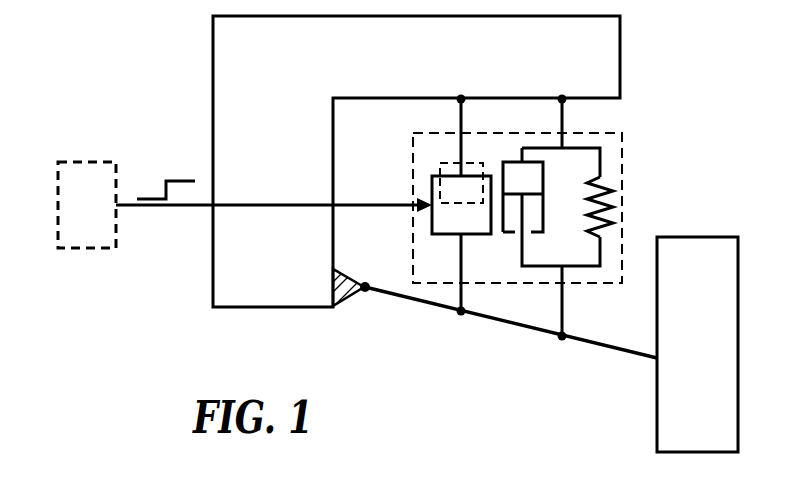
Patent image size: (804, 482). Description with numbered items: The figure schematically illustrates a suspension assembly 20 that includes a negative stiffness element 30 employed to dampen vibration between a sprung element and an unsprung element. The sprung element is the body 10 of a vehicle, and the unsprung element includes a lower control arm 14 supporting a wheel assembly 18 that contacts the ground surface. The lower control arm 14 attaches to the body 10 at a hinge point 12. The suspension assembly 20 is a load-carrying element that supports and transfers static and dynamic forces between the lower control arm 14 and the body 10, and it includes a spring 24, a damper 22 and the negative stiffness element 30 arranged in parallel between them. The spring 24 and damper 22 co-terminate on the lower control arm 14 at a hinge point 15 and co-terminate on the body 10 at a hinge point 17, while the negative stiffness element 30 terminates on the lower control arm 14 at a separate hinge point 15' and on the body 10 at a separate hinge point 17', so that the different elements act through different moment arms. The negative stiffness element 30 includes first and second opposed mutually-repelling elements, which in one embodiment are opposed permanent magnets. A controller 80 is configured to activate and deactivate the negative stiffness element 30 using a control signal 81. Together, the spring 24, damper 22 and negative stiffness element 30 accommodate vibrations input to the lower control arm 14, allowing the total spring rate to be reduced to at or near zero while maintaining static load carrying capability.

The body 10 is at (231, 57).
The hinge point 12 is at (363, 293).
The lower control arm 14 is at (614, 349).
The hinge point 15 is at (545, 356).
The hinge point 15' is at (480, 328).
The hinge point 17 is at (555, 85).
The hinge point 17' is at (457, 99).
The wheel assembly 18 is at (683, 359).
The suspension assembly 20 is at (603, 133).
The damper 22 is at (543, 172).
The spring 24 is at (613, 216).
The negative stiffness element 30 is at (424, 170).
The controller 80 is at (72, 219).
The control signal 81 is at (152, 176).